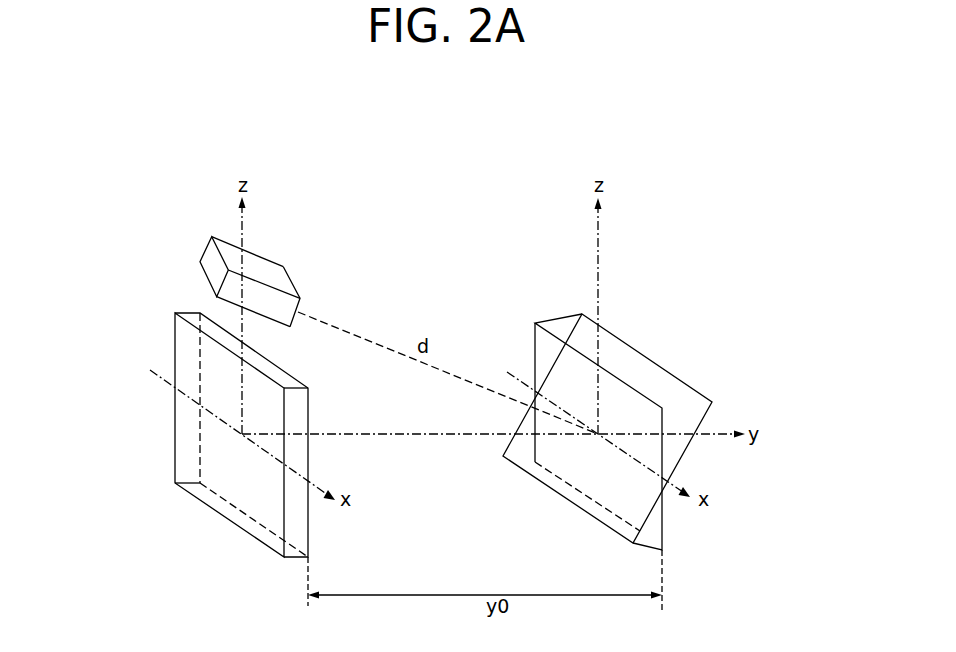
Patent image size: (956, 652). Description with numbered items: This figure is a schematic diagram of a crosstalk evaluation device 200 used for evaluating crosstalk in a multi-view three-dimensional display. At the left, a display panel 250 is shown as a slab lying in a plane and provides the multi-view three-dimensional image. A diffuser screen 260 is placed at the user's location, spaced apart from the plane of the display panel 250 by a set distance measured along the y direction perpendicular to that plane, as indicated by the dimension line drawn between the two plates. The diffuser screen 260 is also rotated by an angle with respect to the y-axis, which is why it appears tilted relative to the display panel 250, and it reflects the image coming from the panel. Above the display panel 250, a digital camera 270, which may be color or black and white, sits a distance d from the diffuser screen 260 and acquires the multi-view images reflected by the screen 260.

The crosstalk evaluation device 200 is at (771, 156).
The display panel 250 is at (228, 517).
The diffuser screen 260 is at (547, 490).
The digital camera 270 is at (207, 250).